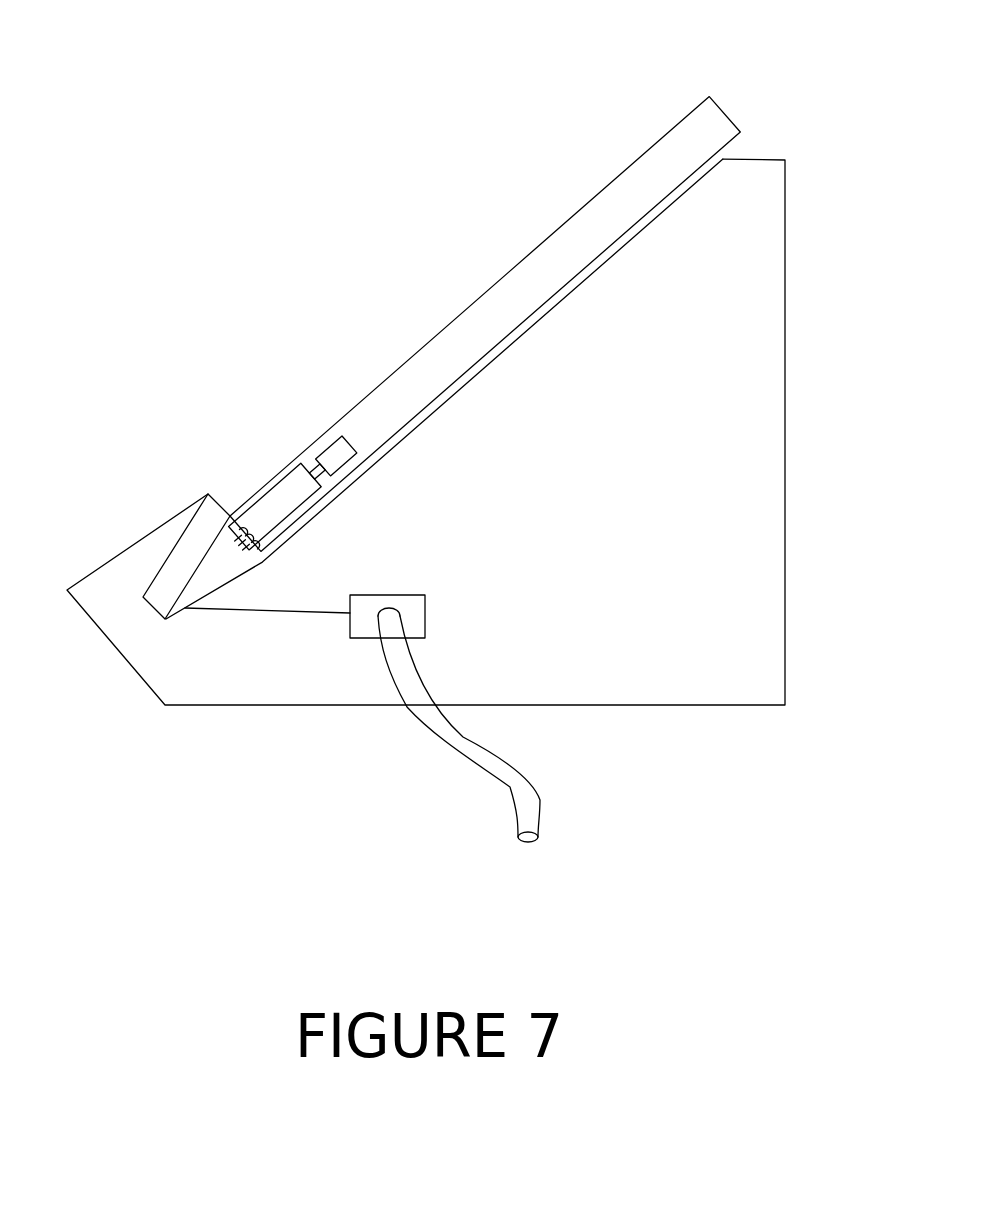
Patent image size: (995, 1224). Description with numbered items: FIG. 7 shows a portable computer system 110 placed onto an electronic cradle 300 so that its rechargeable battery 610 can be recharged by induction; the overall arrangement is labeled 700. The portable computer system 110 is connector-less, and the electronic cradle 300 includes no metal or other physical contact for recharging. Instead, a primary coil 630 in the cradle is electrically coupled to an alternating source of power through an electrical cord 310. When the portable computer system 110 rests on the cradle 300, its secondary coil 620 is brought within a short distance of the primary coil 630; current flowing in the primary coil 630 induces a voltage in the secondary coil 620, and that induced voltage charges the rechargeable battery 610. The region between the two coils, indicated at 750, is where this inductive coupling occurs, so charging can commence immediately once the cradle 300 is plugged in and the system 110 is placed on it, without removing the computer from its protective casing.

The electronic device 700 is at (93, 32).
The portable computer system 110 is at (723, 112).
The electronic cradle 300 is at (785, 228).
The electrical cord 310 is at (537, 793).
The rechargeable battery 610 is at (333, 442).
The secondary coil 620 is at (282, 470).
The primary coil 630 is at (185, 560).
The spring contact 750 is at (242, 553).